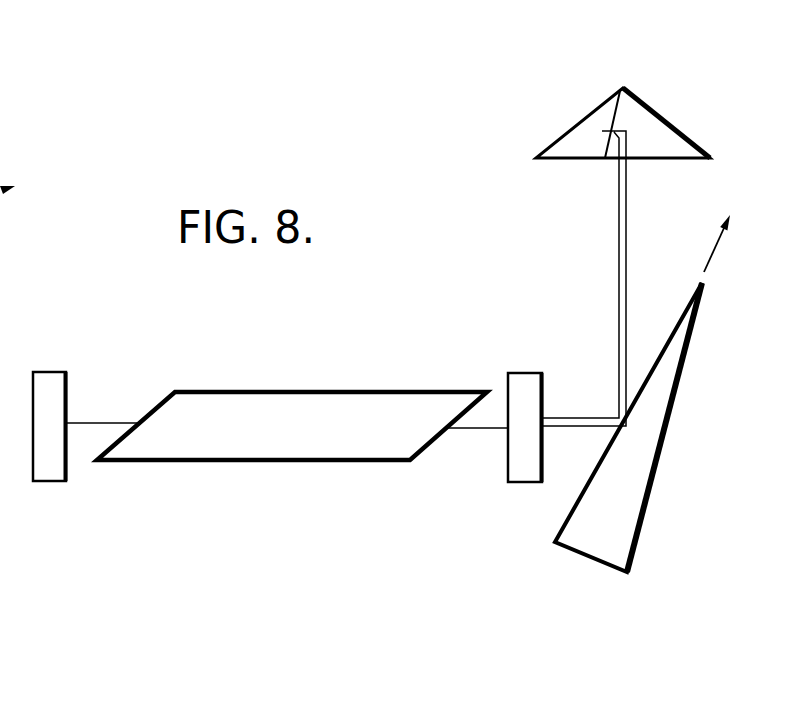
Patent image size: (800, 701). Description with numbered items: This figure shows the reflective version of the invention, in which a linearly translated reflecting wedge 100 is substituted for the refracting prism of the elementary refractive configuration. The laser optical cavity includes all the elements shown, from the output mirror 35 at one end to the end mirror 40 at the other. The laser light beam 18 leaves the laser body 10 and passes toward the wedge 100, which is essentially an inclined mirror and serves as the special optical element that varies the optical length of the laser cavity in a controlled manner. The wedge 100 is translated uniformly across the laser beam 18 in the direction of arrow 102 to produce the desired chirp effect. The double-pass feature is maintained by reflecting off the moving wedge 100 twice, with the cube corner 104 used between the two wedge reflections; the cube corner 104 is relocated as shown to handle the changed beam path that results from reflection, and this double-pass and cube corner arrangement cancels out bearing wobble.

The laser body 10 is at (355, 461).
The laser light beam 18 is at (97, 423).
The output mirror 35 is at (66, 372).
The end mirror 40 is at (508, 483).
The wedge 100 is at (633, 512).
The arrow 102 is at (713, 252).
The cube corner 104 is at (688, 133).